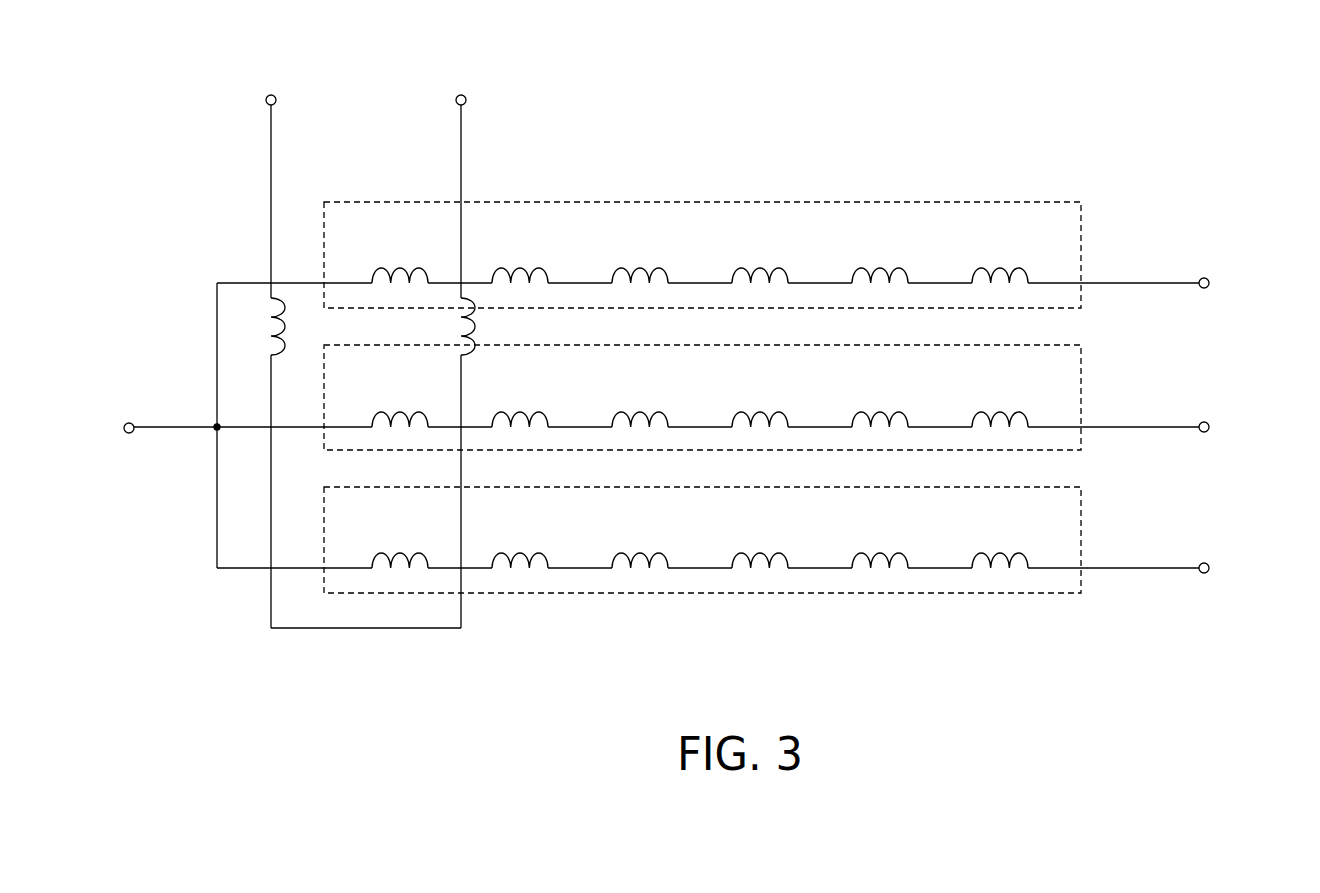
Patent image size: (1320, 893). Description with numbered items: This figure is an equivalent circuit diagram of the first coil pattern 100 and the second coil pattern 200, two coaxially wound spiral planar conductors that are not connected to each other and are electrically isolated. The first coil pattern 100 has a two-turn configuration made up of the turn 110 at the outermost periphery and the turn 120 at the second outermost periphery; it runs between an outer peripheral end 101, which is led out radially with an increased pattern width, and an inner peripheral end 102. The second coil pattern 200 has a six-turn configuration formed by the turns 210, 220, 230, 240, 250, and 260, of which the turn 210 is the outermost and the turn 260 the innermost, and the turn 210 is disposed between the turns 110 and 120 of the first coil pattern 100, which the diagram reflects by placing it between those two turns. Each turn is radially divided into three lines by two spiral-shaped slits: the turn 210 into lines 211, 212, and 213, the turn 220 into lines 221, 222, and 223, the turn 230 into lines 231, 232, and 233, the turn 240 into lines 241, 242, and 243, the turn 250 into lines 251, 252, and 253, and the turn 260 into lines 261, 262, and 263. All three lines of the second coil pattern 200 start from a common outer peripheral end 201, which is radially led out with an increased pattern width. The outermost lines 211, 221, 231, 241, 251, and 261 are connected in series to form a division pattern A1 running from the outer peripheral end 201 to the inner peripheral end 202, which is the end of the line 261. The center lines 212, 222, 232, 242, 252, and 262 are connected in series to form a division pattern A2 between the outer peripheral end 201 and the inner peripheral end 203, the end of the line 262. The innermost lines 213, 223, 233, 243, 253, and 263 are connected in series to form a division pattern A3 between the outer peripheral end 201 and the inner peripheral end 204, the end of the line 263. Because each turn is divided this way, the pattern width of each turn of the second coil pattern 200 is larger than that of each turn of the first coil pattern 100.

The first coil pattern 100 is at (405, 392).
The outer peripheral end 101 is at (271, 95).
The inner peripheral end 102 is at (461, 95).
The turn 110 is at (288, 327).
The turn 120 is at (476, 327).
The second coil pattern 200 is at (1108, 121).
The outer peripheral end 201 is at (130, 422).
The inner peripheral end 202 is at (1210, 283).
The inner peripheral end 203 is at (1210, 427).
The inner peripheral end 204 is at (1210, 568).
The turn 210 is at (401, 194).
The turn 220 is at (521, 194).
The turn 230 is at (641, 194).
The turn 240 is at (761, 194).
The turn 250 is at (881, 194).
The turn 260 is at (1001, 194).
The line 211 is at (398, 267).
The line 212 is at (398, 410).
The line 213 is at (398, 552).
The line 221 is at (518, 267).
The line 222 is at (518, 410).
The line 223 is at (518, 552).
The line 231 is at (638, 267).
The line 232 is at (638, 410).
The line 233 is at (638, 552).
The line 241 is at (758, 267).
The line 242 is at (758, 410).
The line 243 is at (758, 552).
The line 251 is at (878, 267).
The line 252 is at (878, 410).
The line 253 is at (878, 552).
The line 261 is at (998, 267).
The line 262 is at (998, 410).
The line 263 is at (998, 552).
The division pattern A1 is at (1083, 215).
The division pattern A2 is at (1083, 357).
The division pattern A3 is at (1083, 499).